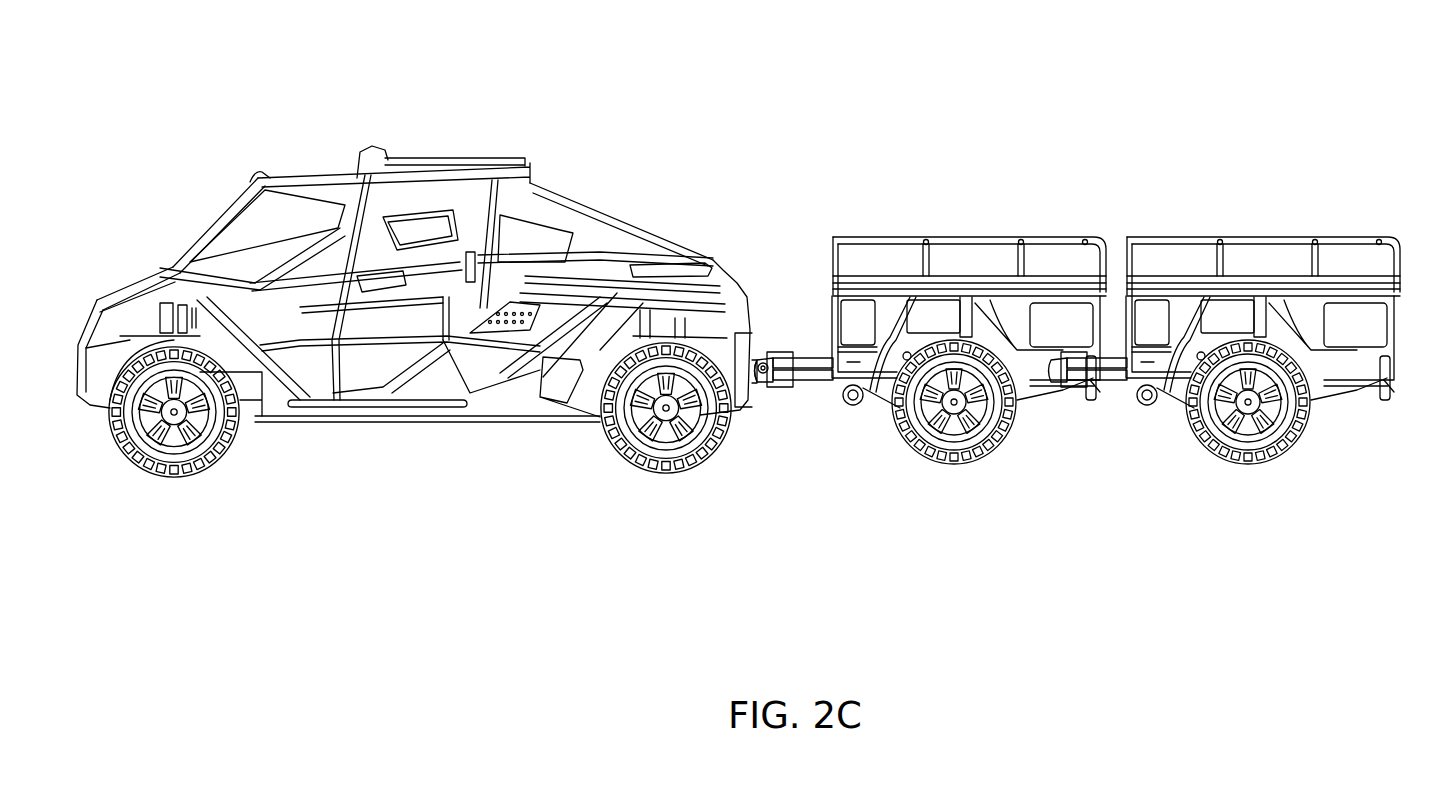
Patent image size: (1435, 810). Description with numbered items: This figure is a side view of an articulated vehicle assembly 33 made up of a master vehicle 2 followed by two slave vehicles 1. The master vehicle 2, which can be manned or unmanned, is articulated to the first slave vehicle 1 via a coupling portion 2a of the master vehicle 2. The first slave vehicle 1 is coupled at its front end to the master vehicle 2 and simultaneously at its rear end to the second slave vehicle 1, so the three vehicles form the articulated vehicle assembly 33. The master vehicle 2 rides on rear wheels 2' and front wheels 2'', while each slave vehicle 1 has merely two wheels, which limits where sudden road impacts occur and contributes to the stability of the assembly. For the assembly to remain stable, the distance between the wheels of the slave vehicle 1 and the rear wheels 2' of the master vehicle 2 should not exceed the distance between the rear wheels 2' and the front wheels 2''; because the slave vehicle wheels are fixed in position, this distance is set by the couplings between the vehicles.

The slave vehicle 1 is at (738, 278).
The master vehicle 2 is at (448, 288).
The coupling portion 2a is at (769, 408).
The rear wheels 2' is at (657, 423).
The front wheels 2'' is at (158, 426).
The articulated vehicle assembly 33 is at (242, 174).